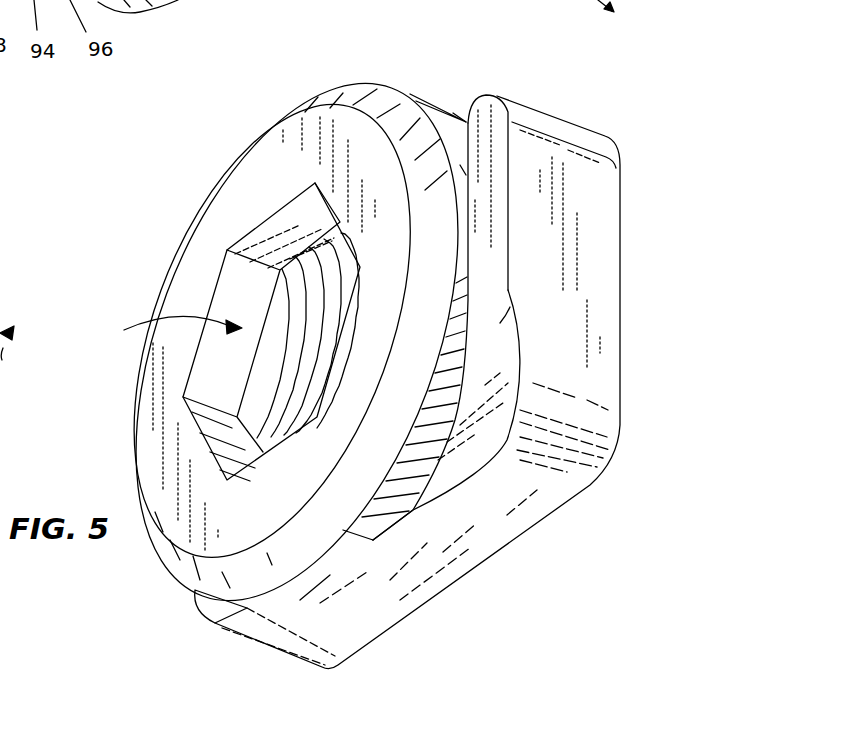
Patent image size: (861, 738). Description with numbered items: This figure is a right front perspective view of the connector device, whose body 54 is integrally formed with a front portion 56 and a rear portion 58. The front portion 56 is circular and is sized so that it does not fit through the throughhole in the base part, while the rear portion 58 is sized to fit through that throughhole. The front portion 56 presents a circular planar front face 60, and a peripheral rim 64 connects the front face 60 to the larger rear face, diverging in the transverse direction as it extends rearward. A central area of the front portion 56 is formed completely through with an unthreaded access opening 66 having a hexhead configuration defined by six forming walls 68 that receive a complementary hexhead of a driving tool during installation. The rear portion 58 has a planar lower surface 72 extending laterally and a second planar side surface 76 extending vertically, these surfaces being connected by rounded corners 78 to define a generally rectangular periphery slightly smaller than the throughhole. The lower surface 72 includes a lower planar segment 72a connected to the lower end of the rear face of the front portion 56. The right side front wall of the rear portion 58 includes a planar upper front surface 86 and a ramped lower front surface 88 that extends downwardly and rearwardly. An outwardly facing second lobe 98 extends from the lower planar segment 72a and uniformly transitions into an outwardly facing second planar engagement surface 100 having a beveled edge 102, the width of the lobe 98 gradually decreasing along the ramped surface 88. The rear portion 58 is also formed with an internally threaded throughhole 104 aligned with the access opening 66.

The body 54 is at (465, 114).
The front portion 56 is at (164, 559).
The rear portion 58 is at (623, 163).
The front face 60 is at (257, 157).
The peripheral rim 64 is at (333, 100).
The access opening 66 is at (168, 329).
The forming walls 68 is at (283, 232).
The lower surface 72 is at (500, 533).
The lower planar segment 72a is at (317, 568).
The second planar side surface 76 is at (607, 227).
The rounded corners 78 is at (550, 127).
The upper front surface 86 is at (483, 117).
The ramped lower front surface 88 is at (468, 318).
The second lobe 98 is at (455, 370).
The second planar engagement surface 100 is at (460, 167).
The beveled edge 102 is at (427, 97).
The internally threaded throughhole 104 is at (280, 407).